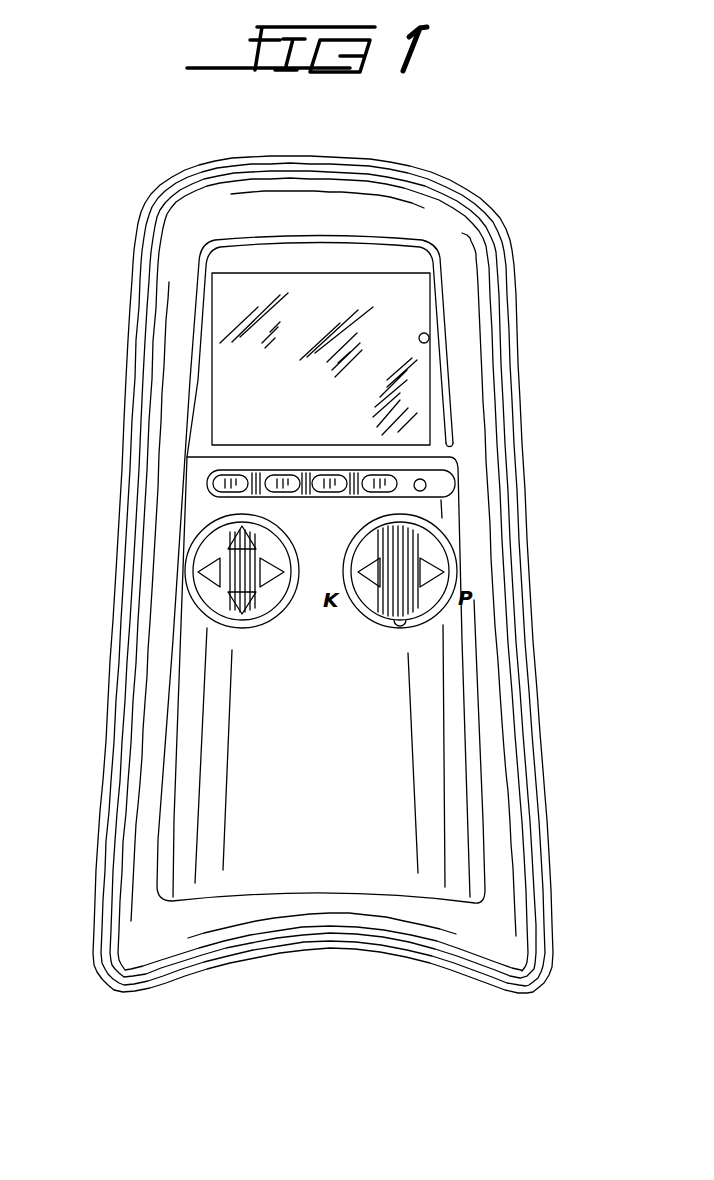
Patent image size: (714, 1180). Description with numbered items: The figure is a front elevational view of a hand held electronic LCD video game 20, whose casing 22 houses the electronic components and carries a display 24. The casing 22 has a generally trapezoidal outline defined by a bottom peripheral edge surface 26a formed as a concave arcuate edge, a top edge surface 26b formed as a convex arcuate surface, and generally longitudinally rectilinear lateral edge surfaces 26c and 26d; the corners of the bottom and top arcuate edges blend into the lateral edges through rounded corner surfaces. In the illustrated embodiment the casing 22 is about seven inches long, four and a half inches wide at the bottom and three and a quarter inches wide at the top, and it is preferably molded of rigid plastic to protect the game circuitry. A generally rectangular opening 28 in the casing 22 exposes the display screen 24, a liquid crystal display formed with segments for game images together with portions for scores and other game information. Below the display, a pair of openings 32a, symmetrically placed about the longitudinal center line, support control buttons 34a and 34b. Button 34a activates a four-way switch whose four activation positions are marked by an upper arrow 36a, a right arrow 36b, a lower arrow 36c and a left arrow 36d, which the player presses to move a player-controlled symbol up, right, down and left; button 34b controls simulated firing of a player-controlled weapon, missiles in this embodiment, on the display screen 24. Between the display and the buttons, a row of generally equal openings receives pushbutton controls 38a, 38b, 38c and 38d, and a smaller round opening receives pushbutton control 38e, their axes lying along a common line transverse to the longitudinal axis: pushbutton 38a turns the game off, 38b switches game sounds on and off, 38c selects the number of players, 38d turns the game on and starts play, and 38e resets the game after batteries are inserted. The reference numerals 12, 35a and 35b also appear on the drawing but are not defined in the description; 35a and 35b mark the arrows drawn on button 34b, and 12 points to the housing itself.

The housing body 12 is at (513, 560).
The hand held game 20 is at (129, 176).
The casing 22 is at (473, 225).
The display screen 24 is at (406, 380).
The bottom peripheral edge surface 26a is at (307, 948).
The top edge surface 26b is at (420, 167).
The lateral edge surface 26c is at (135, 300).
The lateral edge surface 26d is at (517, 297).
The rectangular opening 28 is at (429, 339).
The openings 32a is at (323, 609).
The control button 34a is at (243, 588).
The control button 34b is at (416, 588).
The left arrow key 35a is at (373, 567).
The right arrow key 35b is at (440, 565).
The upper arrow 36a is at (247, 540).
The right arrow 36b is at (270, 570).
The lower arrow 36c is at (235, 605).
The left arrow 36d is at (217, 580).
The pushbutton control 38a is at (217, 481).
The pushbutton control 38b is at (275, 476).
The pushbutton control 38c is at (320, 476).
The pushbutton control 38d is at (372, 476).
The pushbutton control 38e is at (427, 481).